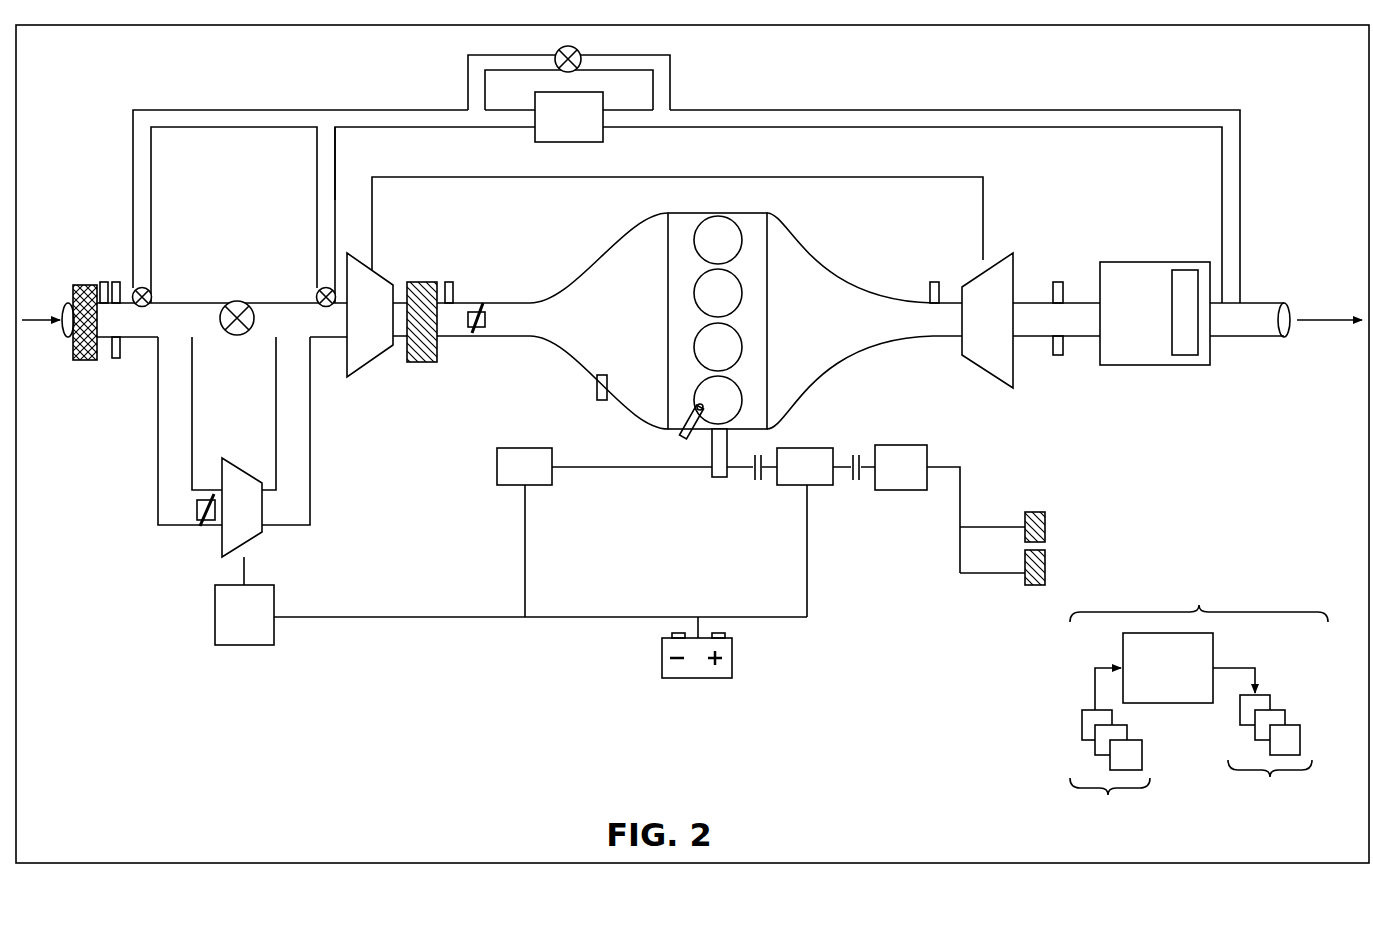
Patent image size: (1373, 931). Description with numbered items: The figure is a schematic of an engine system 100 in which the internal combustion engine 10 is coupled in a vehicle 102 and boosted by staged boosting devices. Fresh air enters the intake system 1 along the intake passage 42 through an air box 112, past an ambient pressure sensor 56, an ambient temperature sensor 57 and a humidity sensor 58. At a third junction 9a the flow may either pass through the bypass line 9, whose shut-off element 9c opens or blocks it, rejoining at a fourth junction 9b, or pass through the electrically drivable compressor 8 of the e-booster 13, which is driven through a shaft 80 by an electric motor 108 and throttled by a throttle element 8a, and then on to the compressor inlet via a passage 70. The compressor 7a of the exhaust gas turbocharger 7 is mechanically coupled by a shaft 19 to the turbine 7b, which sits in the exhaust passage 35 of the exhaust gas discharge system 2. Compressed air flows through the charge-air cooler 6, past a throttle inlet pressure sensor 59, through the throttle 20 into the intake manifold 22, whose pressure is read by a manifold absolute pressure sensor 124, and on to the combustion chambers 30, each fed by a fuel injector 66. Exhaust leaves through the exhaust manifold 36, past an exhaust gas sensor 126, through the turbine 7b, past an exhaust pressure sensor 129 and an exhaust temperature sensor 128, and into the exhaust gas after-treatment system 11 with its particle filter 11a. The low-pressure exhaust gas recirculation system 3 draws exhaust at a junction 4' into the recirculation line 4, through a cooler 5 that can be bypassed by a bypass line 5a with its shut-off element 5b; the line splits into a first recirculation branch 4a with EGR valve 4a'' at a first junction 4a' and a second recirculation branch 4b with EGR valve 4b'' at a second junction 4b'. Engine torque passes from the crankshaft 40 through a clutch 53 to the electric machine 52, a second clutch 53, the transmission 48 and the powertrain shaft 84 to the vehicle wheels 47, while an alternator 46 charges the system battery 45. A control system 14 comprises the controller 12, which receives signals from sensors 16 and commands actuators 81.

The intake system 1 is at (88, 176).
The exhaust gas discharge system 2 is at (1300, 163).
The low-pressure exhaust gas recirculation system 3 is at (1040, 95).
The recirculation line 4 is at (686, 192).
The junction 4' is at (1300, 334).
The first recirculation branch 4a is at (234, 215).
The first junction 4a' is at (172, 323).
The EGR valve 4a'' is at (169, 284).
The second recirculation branch 4b is at (298, 166).
The second junction 4b' is at (297, 321).
The EGR valve 4b'' is at (303, 283).
The cooler 5 is at (569, 117).
The bypass line 5a is at (670, 82).
The shut-off element 5b is at (580, 50).
The charge-air cooler 6 is at (420, 282).
The exhaust gas turbocharger 7 is at (704, 294).
The compressor 7a is at (370, 315).
The turbine 7b is at (987, 320).
The electrically drivable compressor 8 is at (242, 507).
The throttle element 8a is at (197, 522).
The bypass line 9 is at (206, 302).
The third junction 9a is at (178, 342).
The fourth junction 9b is at (290, 340).
The shut-off element 9c is at (237, 337).
The internal combustion engine 10 is at (732, 321).
The exhaust gas after-treatment system 11 is at (1155, 320).
The after-treatment particle filter 11a is at (1175, 355).
The controller 12 is at (1168, 668).
The e-booster 13 is at (200, 553).
The control system 14 is at (1199, 699).
The sensors 16 is at (1110, 752).
The shaft 19 is at (866, 178).
The throttle 20 is at (486, 321).
The intake manifold 22 is at (552, 321).
The combustion chambers 30 is at (740, 237).
The exhaust passage 35 is at (1263, 303).
The exhaust manifold 36 is at (864, 321).
The crankshaft 40 is at (712, 475).
The intake passage 42 is at (66, 338).
The system battery 45 is at (700, 678).
The alternator 46 is at (497, 482).
The vehicle wheels 47 is at (1025, 516).
The transmission 48 is at (901, 467).
The electric machine 52 is at (793, 486).
The clutch 53 is at (853, 458).
The ambient pressure sensor 56 is at (116, 282).
The ambient temperature sensor 57 is at (104, 282).
The humidity sensor 58 is at (116, 358).
The throttle inlet pressure sensor 59 is at (449, 282).
The fuel injector 66 is at (683, 440).
The passage 70 is at (311, 453).
The shaft 80 is at (246, 572).
The actuators 81 is at (1262, 744).
The powertrain shaft 84 is at (938, 468).
The engine system 100 is at (1302, 60).
The vehicle 102 is at (926, 27).
The electric motor 108 is at (244, 615).
The air box 112 is at (75, 285).
The manifold absolute pressure sensor 124 is at (597, 380).
The exhaust gas sensor 126 is at (935, 282).
The exhaust temperature sensor 128 is at (1058, 355).
The exhaust pressure sensor 129 is at (1060, 282).